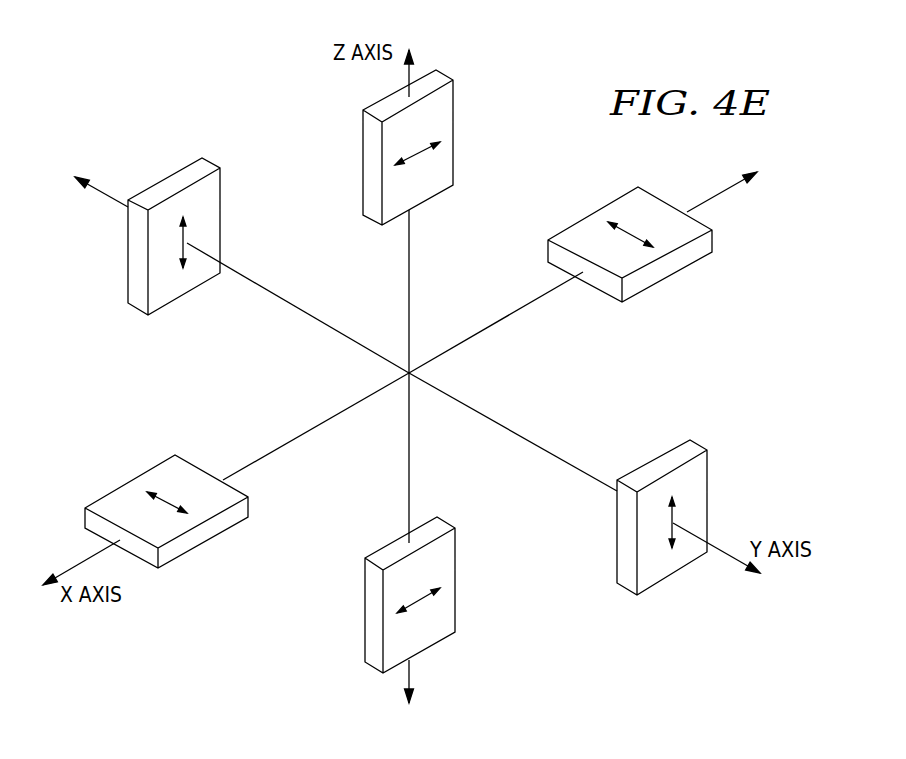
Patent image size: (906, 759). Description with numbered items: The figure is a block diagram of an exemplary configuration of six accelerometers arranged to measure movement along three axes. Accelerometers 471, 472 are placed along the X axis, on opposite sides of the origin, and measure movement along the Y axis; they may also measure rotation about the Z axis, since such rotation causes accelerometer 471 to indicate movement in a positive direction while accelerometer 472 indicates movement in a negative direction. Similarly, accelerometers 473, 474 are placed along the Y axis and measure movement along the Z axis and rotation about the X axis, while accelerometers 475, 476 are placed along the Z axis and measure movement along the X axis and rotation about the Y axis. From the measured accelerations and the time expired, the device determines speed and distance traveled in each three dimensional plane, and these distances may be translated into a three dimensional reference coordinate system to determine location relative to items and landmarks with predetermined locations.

The accelerometer 471 is at (130, 480).
The accelerometer 472 is at (595, 213).
The accelerometer 473 is at (655, 460).
The accelerometer 474 is at (167, 178).
The accelerometer 475 is at (453, 130).
The accelerometer 476 is at (363, 612).